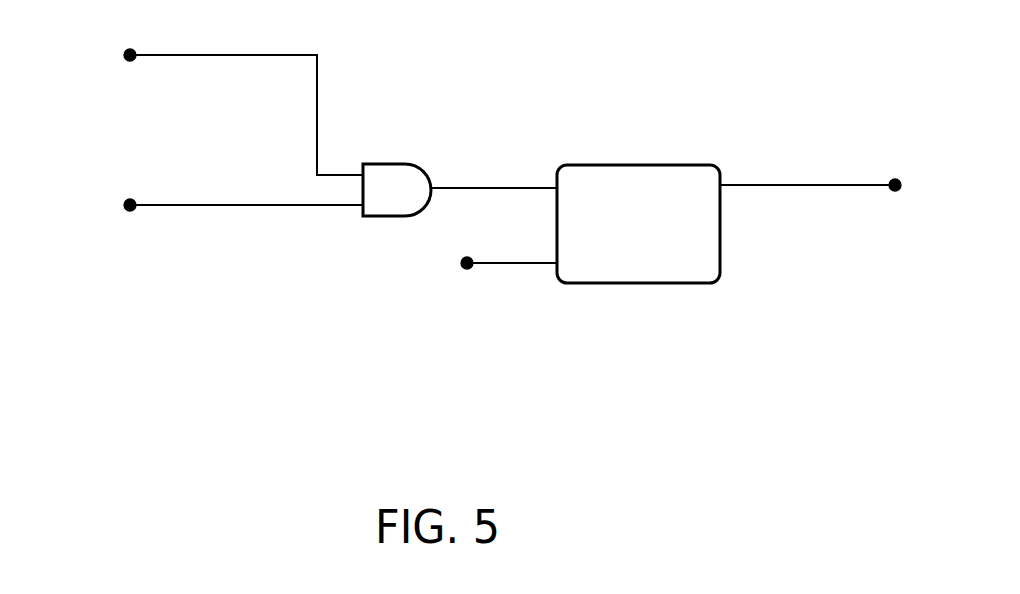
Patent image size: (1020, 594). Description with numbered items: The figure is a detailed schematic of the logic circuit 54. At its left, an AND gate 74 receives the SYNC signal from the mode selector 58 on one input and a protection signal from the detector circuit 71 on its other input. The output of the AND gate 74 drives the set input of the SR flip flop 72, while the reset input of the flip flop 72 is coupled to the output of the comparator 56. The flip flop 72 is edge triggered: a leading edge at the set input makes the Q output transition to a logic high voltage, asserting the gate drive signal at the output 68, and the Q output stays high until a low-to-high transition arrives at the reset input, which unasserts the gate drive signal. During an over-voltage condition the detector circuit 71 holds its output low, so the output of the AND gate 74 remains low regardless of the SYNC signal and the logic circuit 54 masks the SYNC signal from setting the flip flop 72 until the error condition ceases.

The logic circuit 54 is at (362, 356).
The detector circuit 71 is at (207, 104).
The mode selector 58 is at (207, 204).
The AND gate 74 is at (406, 163).
The comparator 56 is at (472, 268).
The SR flip flop 72 is at (647, 165).
The output terminal 68 is at (903, 181).